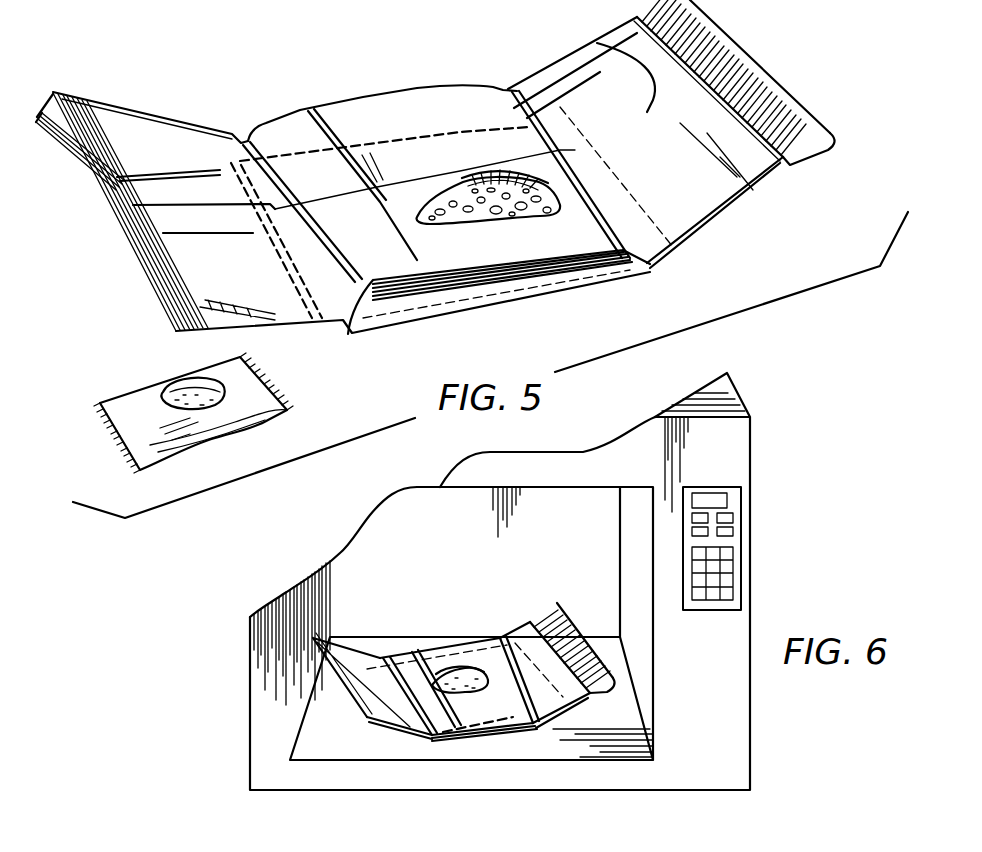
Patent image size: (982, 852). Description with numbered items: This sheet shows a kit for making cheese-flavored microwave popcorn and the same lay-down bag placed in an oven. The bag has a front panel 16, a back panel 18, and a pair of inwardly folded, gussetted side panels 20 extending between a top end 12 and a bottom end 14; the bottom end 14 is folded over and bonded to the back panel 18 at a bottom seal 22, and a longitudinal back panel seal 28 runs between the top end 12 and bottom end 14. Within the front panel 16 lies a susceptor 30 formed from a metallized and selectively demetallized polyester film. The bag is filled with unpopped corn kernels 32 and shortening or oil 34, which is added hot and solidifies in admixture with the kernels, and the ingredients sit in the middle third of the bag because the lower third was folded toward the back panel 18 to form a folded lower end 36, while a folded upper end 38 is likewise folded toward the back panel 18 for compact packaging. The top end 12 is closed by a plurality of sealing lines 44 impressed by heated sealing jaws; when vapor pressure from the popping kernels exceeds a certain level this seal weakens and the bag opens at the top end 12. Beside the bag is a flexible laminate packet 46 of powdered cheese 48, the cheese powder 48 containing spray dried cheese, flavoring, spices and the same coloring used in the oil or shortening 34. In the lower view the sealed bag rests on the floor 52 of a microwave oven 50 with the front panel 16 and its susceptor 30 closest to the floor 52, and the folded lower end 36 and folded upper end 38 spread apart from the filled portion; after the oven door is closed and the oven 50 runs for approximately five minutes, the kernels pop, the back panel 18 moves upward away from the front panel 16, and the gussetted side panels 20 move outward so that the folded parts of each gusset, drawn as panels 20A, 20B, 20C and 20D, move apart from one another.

In FIG. 5, the top end 12 is at (35, 115).
In FIG. 6, the top end 12 is at (312, 645).
In FIG. 5, the bottom end 14 is at (760, 83).
In FIG. 6, the bottom end 14 is at (573, 690).
In FIG. 6, the front panel 16 is at (365, 706).
In FIG. 5, the back panel 18 is at (440, 126).
In FIG. 6, the back panel 18 is at (508, 701).
In FIG. 6, the gussetted side panels 20 is at (367, 724).
In FIG. 5, the flap panel 20A is at (82, 152).
In FIG. 5, the flap panel 20B is at (56, 90).
In FIG. 5, the flap panel 20C is at (275, 323).
In FIG. 5, the flap panel 20D is at (232, 304).
In FIG. 5, the bottom seal 22 is at (812, 150).
In FIG. 6, the bottom seal 22 is at (612, 684).
In FIG. 5, the back panel seal 28 is at (597, 43).
In FIG. 5, the susceptor 30 is at (460, 130).
In FIG. 6, the susceptor 30 is at (500, 728).
In FIG. 5, the unpopped corn kernels 32 is at (465, 186).
In FIG. 6, the unpopped corn kernels 32 is at (455, 672).
In FIG. 5, the shortening or oil 34 is at (470, 214).
In FIG. 6, the shortening or oil 34 is at (465, 692).
In FIG. 5, the folded lower end 36 is at (736, 206).
In FIG. 6, the folded lower end 36 is at (522, 633).
In FIG. 5, the folded upper end 38 is at (173, 114).
In FIG. 6, the folded upper end 38 is at (403, 717).
In FIG. 5, the sealing lines 44 is at (210, 314).
In FIG. 5, the packet 46 is at (258, 433).
In FIG. 5, the powdered cheese 48 is at (181, 378).
In FIG. 6, the microwave oven 50 is at (750, 457).
In FIG. 6, the floor 52 is at (352, 755).